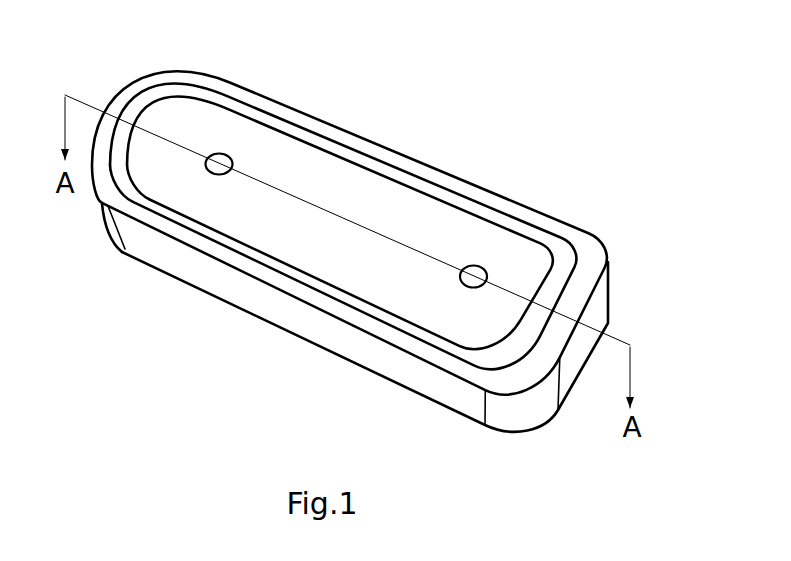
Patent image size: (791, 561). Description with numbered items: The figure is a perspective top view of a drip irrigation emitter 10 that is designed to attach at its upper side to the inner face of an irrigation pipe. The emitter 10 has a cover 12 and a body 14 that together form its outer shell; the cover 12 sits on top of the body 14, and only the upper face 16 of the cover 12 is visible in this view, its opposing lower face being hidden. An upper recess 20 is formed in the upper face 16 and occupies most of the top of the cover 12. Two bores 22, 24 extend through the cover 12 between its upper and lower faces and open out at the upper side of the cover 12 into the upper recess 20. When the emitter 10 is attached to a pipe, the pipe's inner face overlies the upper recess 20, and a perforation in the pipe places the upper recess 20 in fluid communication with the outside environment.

The drip irrigation emitter 10 is at (350, 247).
The cover 12 is at (202, 127).
The body 14 is at (520, 408).
The upper face 16 is at (368, 224).
The upper recess 20 is at (291, 180).
The bore 22 is at (480, 268).
The bore 24 is at (224, 152).